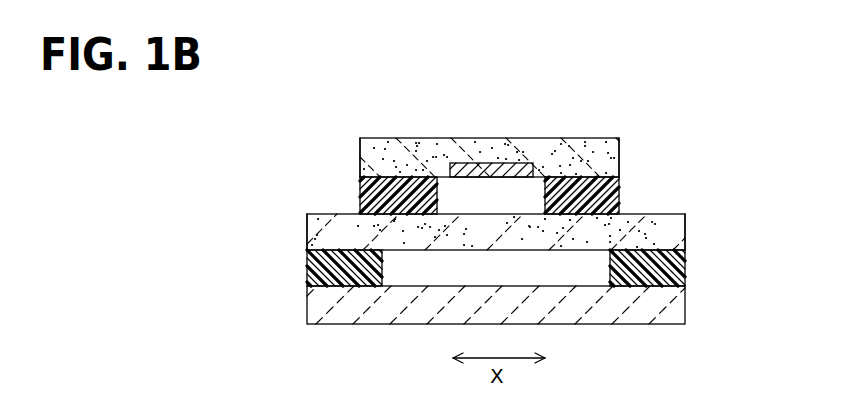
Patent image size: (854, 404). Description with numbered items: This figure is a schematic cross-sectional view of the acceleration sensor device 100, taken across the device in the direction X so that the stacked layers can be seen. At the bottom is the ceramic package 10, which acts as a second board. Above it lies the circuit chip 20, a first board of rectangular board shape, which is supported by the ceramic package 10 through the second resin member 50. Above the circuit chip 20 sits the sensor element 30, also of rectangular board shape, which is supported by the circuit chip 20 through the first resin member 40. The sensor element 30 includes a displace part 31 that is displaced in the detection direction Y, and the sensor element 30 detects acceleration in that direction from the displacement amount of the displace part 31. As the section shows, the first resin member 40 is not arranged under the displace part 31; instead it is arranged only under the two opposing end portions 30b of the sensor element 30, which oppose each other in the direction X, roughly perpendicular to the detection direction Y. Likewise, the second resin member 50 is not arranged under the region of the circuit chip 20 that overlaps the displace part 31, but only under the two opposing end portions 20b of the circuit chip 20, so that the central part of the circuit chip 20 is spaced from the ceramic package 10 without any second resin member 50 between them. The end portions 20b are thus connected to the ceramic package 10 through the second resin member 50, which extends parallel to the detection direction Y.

The acceleration sensor device 100 is at (360, 138).
The ceramic package 10 is at (565, 305).
The circuit chip 20 is at (572, 235).
The end portions of the circuit chip 20b is at (307, 232).
The sensor element 30 is at (425, 148).
The end portions of the sensor element 30b is at (360, 158).
The displace part 31 is at (534, 163).
The first resin member 40 is at (360, 192).
The second resin member 50 is at (307, 268).